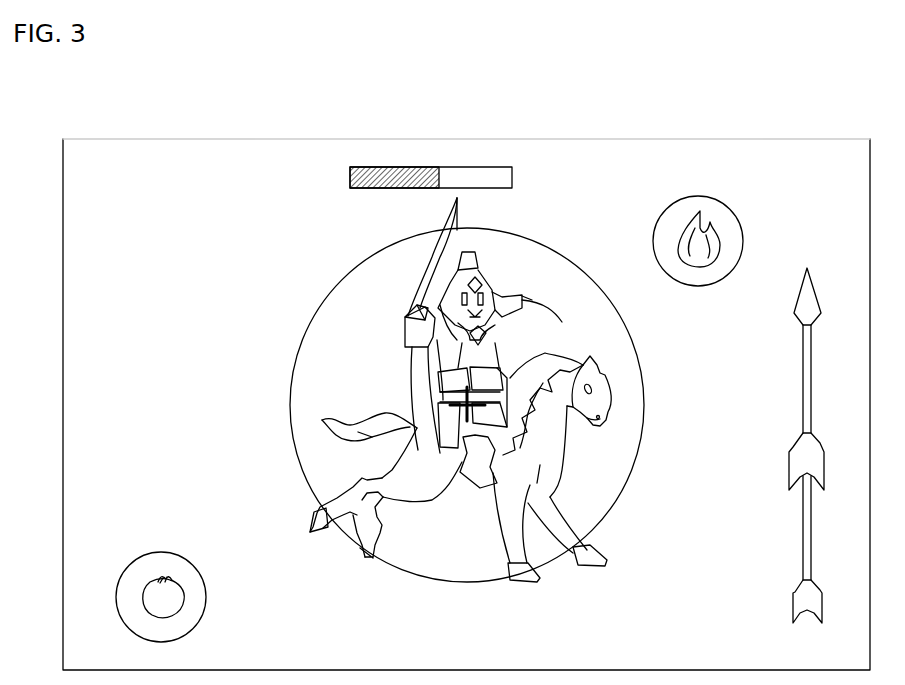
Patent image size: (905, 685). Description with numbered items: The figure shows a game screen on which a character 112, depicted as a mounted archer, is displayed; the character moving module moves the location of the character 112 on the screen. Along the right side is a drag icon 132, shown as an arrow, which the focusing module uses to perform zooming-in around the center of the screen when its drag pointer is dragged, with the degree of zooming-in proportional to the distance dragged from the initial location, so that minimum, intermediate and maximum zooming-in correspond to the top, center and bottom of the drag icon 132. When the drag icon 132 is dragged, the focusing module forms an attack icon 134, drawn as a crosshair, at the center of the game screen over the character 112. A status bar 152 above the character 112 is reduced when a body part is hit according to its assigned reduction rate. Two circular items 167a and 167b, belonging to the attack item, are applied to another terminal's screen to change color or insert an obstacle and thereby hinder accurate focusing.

The status bar 152 is at (512, 178).
The character 112 is at (562, 322).
The attack icon 134 is at (455, 403).
The item 167a is at (743, 241).
The drag icon 132 is at (803, 390).
The item 167b is at (206, 597).